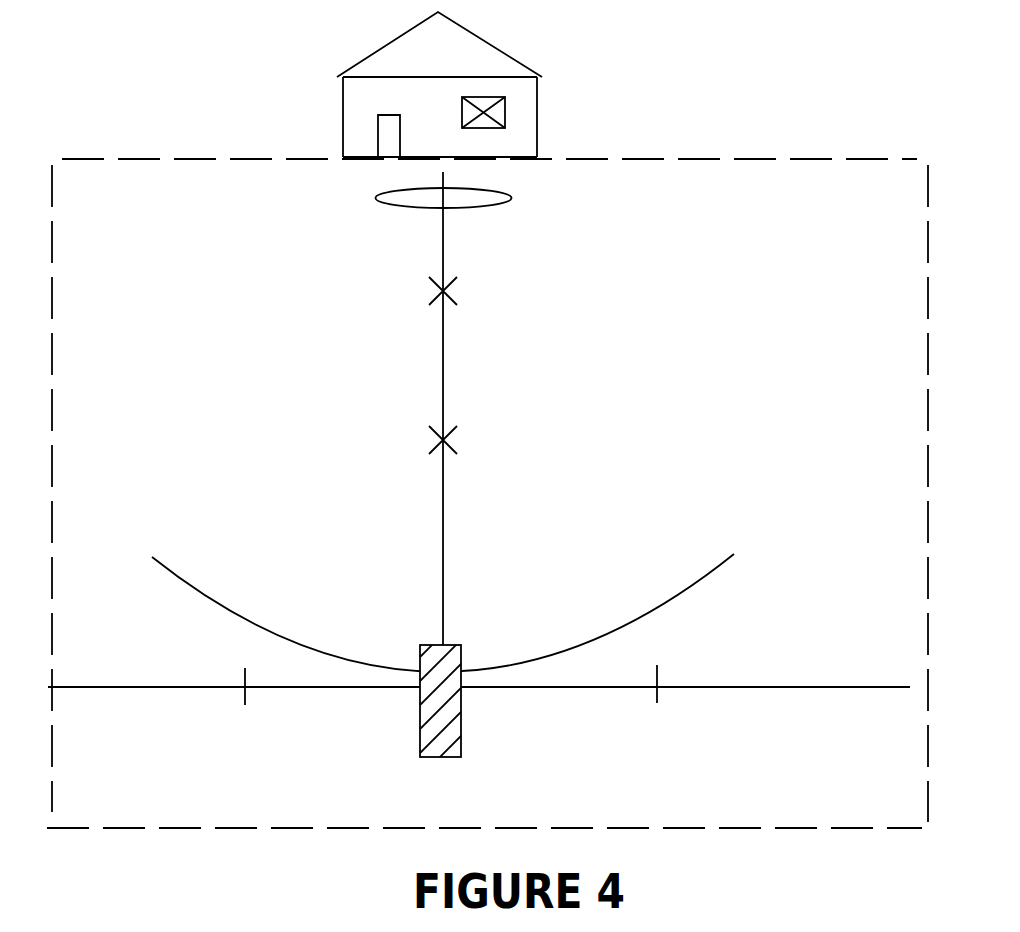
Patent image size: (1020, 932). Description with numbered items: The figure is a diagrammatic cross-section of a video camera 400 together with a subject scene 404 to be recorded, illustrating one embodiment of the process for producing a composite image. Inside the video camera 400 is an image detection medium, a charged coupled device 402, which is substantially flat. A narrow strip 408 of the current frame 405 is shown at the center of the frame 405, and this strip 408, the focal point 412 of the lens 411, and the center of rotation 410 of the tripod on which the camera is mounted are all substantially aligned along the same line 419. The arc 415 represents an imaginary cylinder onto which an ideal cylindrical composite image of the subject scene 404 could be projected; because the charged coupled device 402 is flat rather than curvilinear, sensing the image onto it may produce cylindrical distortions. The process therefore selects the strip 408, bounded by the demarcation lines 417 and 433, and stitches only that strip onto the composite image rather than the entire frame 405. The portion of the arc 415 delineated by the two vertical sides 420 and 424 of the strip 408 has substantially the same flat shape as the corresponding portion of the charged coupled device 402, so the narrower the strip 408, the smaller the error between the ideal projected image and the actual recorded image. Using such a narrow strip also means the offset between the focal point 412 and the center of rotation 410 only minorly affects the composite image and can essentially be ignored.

The video camera 400 is at (897, 157).
The charged coupled device 402 is at (832, 686).
The subject scene 404 is at (538, 98).
The current frame 405 is at (545, 687).
The narrow strip 408 is at (448, 643).
The center of rotation 410 is at (450, 440).
The lens 411 is at (512, 198).
The focal point 412 is at (450, 291).
The arc 415 is at (197, 607).
The demarcation line 417 is at (245, 689).
The line 419 is at (444, 367).
The vertical side 420 is at (420, 735).
The vertical side 424 is at (461, 735).
The demarcation line 433 is at (658, 685).